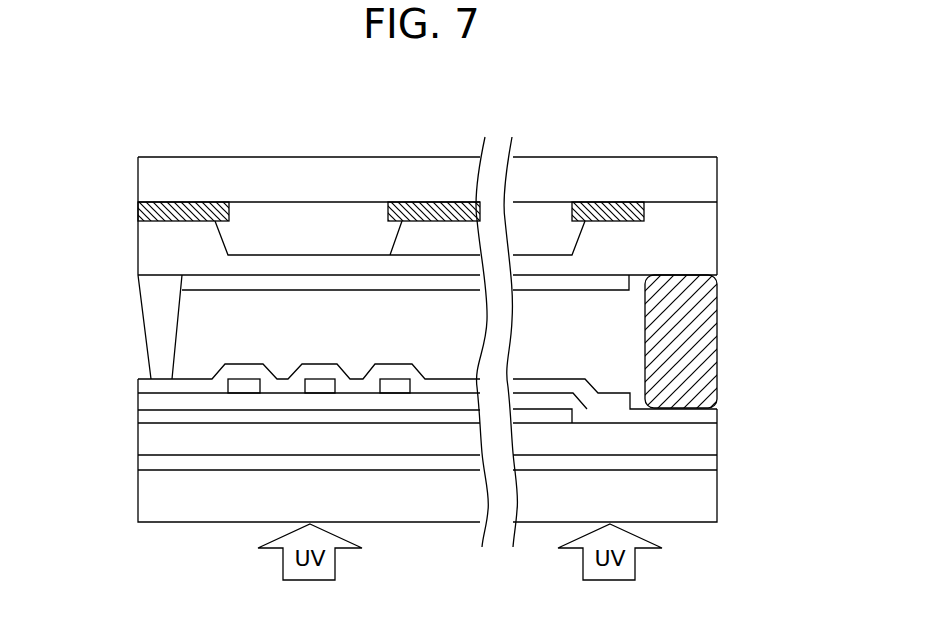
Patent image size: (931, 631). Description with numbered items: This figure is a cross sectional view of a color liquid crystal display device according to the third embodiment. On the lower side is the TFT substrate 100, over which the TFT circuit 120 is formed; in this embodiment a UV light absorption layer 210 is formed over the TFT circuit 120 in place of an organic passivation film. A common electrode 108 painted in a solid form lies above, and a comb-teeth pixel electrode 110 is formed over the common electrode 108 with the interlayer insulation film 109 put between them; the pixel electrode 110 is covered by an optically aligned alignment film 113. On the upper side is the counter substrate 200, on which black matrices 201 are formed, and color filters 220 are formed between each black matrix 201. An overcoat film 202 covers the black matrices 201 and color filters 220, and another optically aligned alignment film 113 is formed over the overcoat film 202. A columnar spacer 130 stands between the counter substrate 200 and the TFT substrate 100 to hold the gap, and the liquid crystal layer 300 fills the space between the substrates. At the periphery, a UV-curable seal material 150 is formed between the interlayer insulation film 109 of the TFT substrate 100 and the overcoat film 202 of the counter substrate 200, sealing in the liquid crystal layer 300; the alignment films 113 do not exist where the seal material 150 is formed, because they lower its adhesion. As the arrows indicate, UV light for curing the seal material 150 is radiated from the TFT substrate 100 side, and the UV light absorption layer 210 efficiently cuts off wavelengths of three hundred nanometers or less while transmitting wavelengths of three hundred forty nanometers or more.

The TFT substrate 100 is at (148, 495).
The common electrode 108 is at (148, 415).
The interlayer insulation film 109 is at (148, 402).
The pixel electrode 110 is at (392, 386).
The alignment film 113 is at (338, 287).
The TFT circuit 120 is at (148, 462).
The columnar spacer 130 is at (160, 348).
The seal material 150 is at (702, 345).
The counter substrate 200 is at (148, 183).
The black matrix 201 is at (192, 213).
The overcoat film 202 is at (160, 235).
The UV light absorption layer 210 is at (148, 440).
The color filter 220 is at (248, 238).
The liquid crystal layer 300 is at (215, 312).